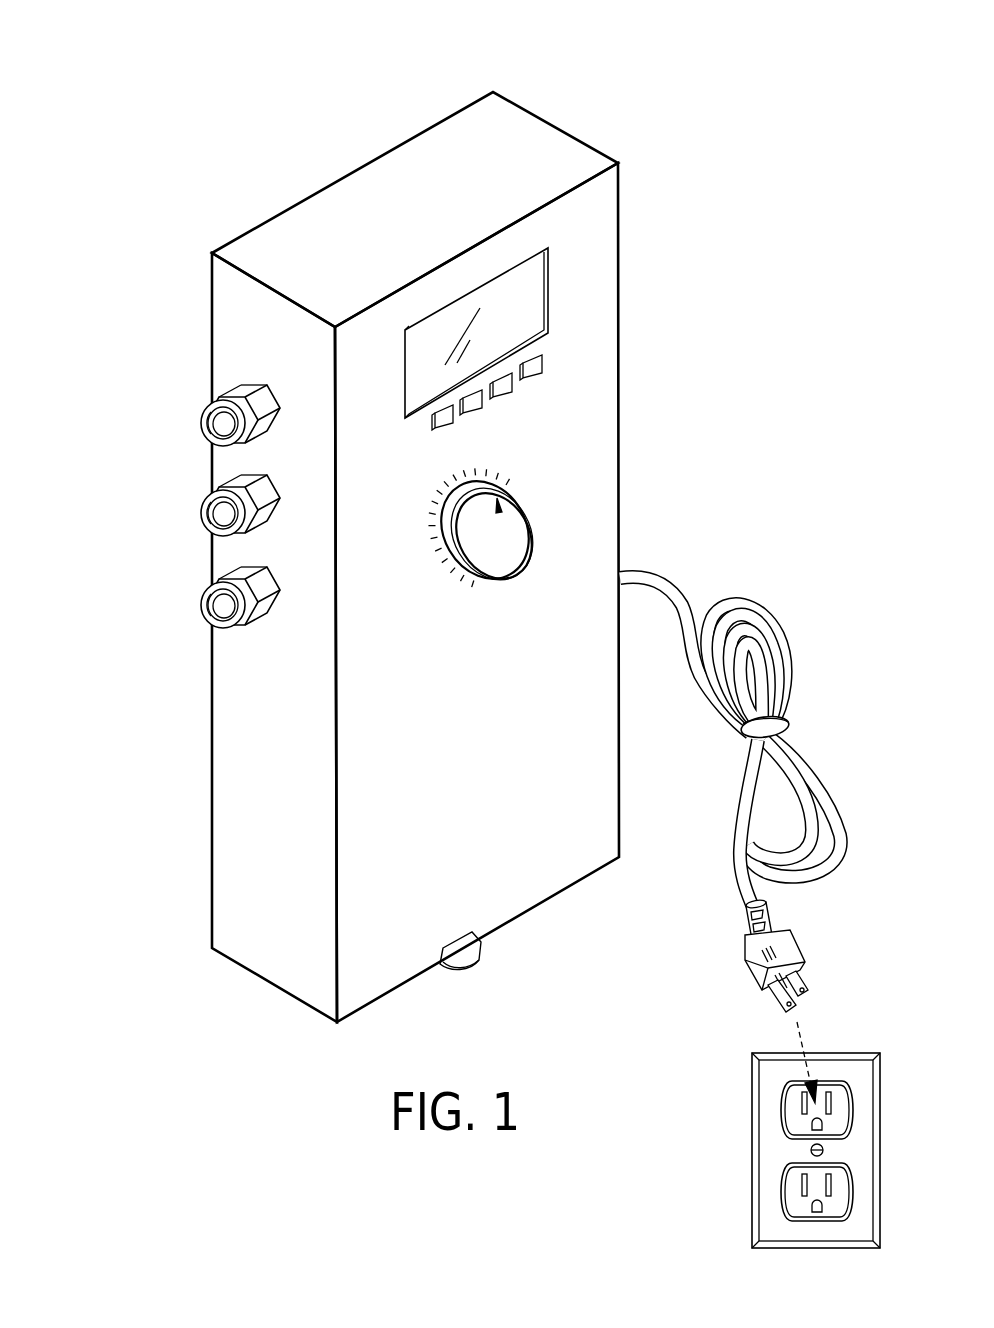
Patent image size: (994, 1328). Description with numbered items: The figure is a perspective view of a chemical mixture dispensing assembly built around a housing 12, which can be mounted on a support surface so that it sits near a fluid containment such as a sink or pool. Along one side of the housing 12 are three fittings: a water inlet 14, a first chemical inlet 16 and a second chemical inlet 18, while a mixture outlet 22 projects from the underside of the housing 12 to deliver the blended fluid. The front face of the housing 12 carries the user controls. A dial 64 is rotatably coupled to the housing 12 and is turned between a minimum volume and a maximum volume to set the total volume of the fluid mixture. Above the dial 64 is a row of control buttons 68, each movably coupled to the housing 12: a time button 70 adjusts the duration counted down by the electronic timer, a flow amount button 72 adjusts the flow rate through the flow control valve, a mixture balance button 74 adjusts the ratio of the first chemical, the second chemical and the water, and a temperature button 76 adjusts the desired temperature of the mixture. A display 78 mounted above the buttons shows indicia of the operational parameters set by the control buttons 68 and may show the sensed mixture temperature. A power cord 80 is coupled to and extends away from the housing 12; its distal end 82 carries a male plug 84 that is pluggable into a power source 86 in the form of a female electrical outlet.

The housing 12 is at (248, 233).
The water inlet 14 is at (200, 418).
The first chemical inlet 16 is at (207, 500).
The second chemical inlet 18 is at (207, 590).
The mixture outlet 22 is at (463, 973).
The dial 64 is at (528, 508).
The control buttons 68 is at (517, 215).
The time button 70 is at (440, 405).
The flow amount button 72 is at (472, 390).
The mixture balance button 74 is at (502, 373).
The temperature button 76 is at (532, 357).
The display 78 is at (552, 290).
The power cord 80 is at (753, 618).
The distal end 82 is at (747, 908).
The male plug 84 is at (750, 970).
The power source 86 is at (853, 1052).